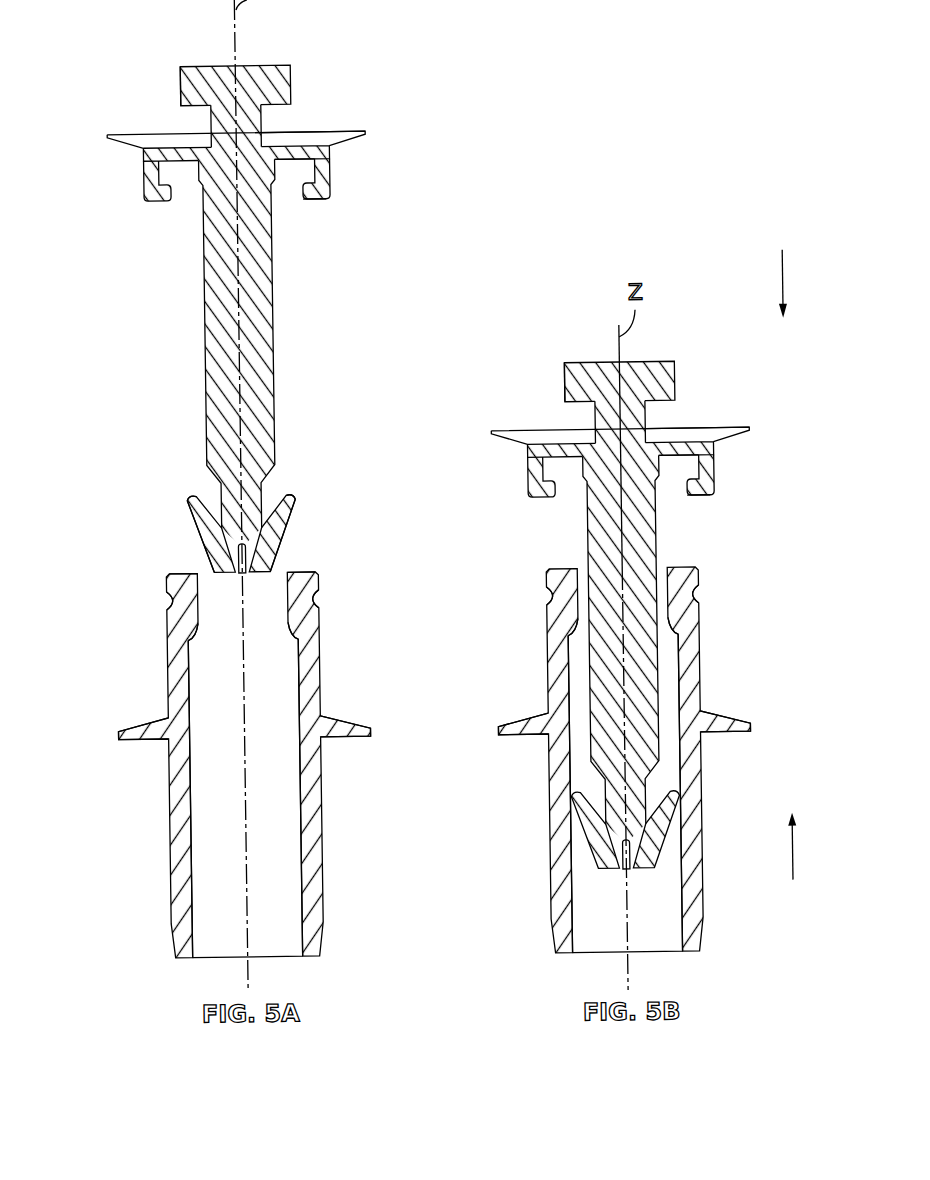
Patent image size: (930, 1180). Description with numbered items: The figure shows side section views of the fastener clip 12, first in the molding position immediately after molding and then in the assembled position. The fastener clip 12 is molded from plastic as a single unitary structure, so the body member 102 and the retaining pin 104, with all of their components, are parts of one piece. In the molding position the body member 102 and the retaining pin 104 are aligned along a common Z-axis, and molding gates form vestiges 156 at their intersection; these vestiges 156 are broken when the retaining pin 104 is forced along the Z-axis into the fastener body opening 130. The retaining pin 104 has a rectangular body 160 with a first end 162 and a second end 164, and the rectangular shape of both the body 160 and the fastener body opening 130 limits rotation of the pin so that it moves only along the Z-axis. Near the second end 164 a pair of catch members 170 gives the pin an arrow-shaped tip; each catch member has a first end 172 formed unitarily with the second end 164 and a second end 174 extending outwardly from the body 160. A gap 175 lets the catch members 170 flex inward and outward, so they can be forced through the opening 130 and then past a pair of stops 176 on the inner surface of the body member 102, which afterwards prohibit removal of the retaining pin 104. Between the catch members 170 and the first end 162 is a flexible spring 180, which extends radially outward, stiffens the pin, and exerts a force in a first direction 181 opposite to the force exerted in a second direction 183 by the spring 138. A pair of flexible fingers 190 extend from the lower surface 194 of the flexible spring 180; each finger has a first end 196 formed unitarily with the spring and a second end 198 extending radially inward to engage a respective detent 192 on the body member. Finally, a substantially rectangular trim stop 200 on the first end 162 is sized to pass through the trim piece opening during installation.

In FIG. 5A, the fastener clip 12 is at (410, 355).
In FIG. 5B, the fastener clip 12 is at (738, 571).
In FIG. 5A, the body member 102 is at (327, 821).
In FIG. 5B, the body member 102 is at (720, 752).
In FIG. 5A, the retaining pin 104 is at (373, 122).
In FIG. 5B, the retaining pin 104 is at (753, 415).
In FIG. 5A, the fastener body opening 130 is at (281, 843).
In FIG. 5B, the fastener body opening 130 is at (666, 929).
In FIG. 5A, the spring 138 is at (111, 734).
In FIG. 5B, the spring 138 is at (500, 727).
In FIG. 5A, the vestiges 156 is at (194, 569).
In FIG. 5A, the retaining pin body 160 is at (276, 348).
In FIG. 5B, the retaining pin body 160 is at (586, 528).
In FIG. 5A, the first end 162 is at (263, 67).
In FIG. 5B, the first end 162 is at (648, 360).
In FIG. 5A, the second end 164 is at (273, 572).
In FIG. 5A, the catch members 170 is at (185, 518).
In FIG. 5B, the catch members 170 is at (567, 812).
In FIG. 5A, the first end 172 is at (194, 537).
In FIG. 5A, the second end 174 is at (181, 497).
In FIG. 5B, the gap 175 is at (620, 868).
In FIG. 5A, the stops 176 is at (179, 648).
In FIG. 5B, the stops 176 is at (568, 645).
In FIG. 5A, the flexible spring 180 is at (122, 146).
In FIG. 5B, the flexible spring 180 is at (513, 445).
In FIG. 5B, the first direction 181 is at (784, 283).
In FIG. 5B, the second direction 183 is at (786, 848).
In FIG. 5A, the flexible fingers 190 is at (144, 193).
In FIG. 5B, the flexible fingers 190 is at (531, 489).
In FIG. 5A, the detents 192 is at (157, 603).
In FIG. 5B, the detents 192 is at (544, 596).
In FIG. 5A, the lower surface 194 is at (286, 158).
In FIG. 5B, the lower surface 194 is at (671, 452).
In FIG. 5A, the first end 196 is at (334, 160).
In FIG. 5B, the first end 196 is at (716, 455).
In FIG. 5A, the second end 198 is at (320, 200).
In FIG. 5B, the second end 198 is at (703, 493).
In FIG. 5A, the trim stop 200 is at (179, 88).
In FIG. 5B, the trim stop 200 is at (567, 382).